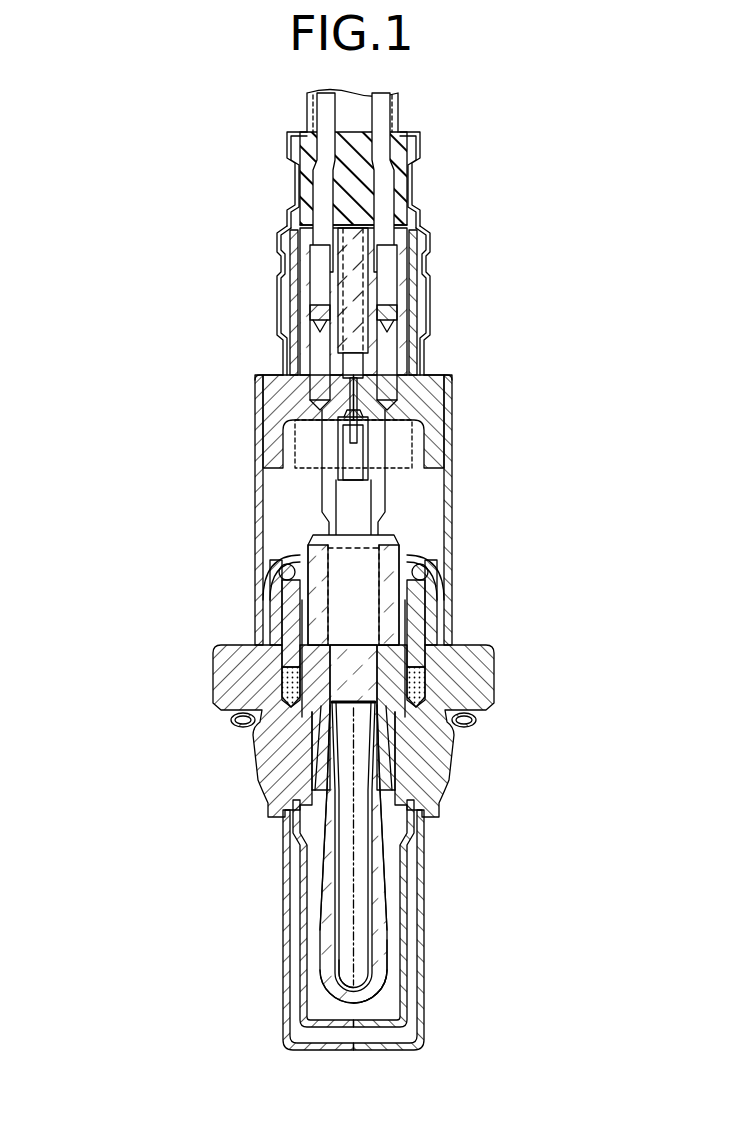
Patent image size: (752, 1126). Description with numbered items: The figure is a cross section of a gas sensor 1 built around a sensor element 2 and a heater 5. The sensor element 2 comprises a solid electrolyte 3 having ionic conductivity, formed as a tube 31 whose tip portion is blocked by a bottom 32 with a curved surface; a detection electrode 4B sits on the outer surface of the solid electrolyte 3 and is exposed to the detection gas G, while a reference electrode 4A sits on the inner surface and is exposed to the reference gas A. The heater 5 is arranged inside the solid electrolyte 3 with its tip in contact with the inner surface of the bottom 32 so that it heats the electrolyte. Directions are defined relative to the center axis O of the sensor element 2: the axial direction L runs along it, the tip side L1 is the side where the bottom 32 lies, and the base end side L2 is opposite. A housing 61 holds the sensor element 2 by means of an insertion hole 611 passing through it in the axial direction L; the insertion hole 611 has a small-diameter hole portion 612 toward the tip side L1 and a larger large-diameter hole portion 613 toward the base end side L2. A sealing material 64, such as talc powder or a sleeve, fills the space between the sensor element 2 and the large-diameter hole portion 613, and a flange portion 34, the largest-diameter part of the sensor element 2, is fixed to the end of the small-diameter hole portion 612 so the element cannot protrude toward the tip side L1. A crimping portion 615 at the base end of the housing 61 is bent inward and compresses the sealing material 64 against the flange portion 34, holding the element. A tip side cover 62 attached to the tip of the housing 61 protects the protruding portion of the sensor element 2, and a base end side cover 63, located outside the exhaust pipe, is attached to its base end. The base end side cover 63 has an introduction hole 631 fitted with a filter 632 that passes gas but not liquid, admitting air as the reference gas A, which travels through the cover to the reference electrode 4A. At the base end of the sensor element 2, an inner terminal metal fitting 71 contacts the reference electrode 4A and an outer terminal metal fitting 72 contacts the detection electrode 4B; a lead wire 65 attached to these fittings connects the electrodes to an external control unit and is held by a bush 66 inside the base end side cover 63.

The gas sensor 1 is at (205, 436).
The sensor element 2 is at (394, 893).
The solid electrolyte 3 is at (385, 828).
The tube 31 is at (328, 922).
The bottom 32 is at (370, 995).
The reference electrode 4A is at (345, 985).
The detection electrode 4B is at (385, 950).
The heater 5 is at (343, 890).
The housing 61 is at (240, 678).
The insertion hole 611 is at (390, 774).
The small-diameter hole portion 612 is at (312, 778).
The large-diameter hole portion 613 is at (287, 623).
The crimping portion 615 is at (270, 575).
The tip side cover 62 is at (420, 940).
The base end side cover 63 is at (452, 528).
The introduction hole 631 is at (277, 305).
The filter 632 is at (432, 323).
The sealing material 64 is at (417, 682).
The lead wire 65 is at (378, 190).
The bush 66 is at (300, 183).
The inner terminal metal fitting 71 is at (360, 585).
The outer terminal metal fitting 72 is at (390, 492).
The flange portion 34 is at (450, 727).
The reference gas A is at (442, 307).
The center axis O is at (283, 853).
The detection gas G is at (186, 913).
The axial direction L is at (607, 937).
The tip side L1 is at (606, 1020).
The base end side L2 is at (606, 917).